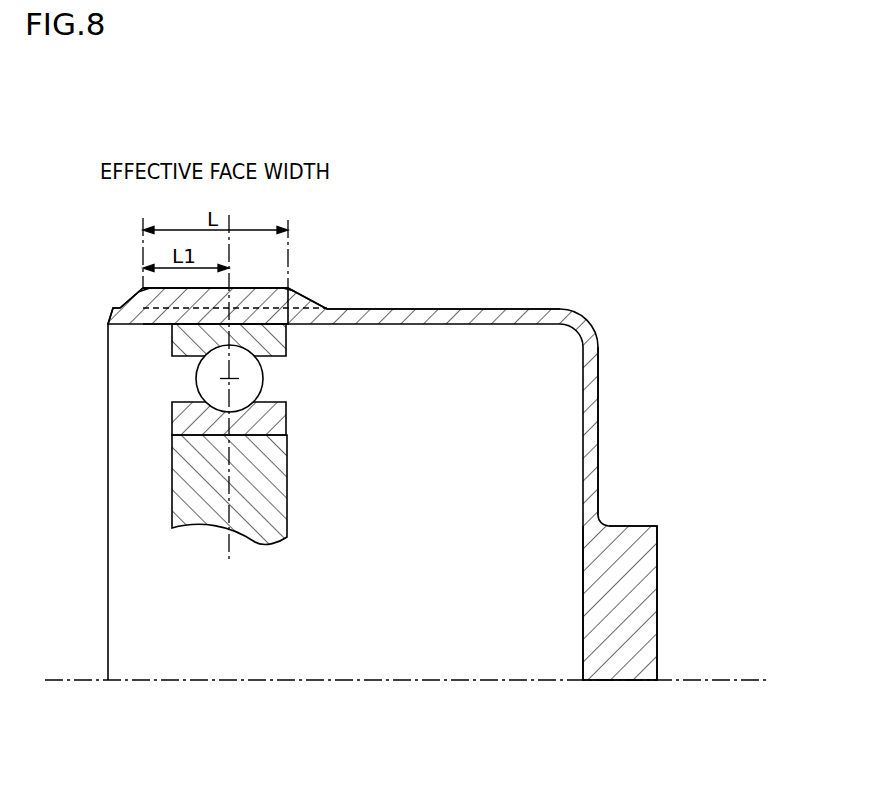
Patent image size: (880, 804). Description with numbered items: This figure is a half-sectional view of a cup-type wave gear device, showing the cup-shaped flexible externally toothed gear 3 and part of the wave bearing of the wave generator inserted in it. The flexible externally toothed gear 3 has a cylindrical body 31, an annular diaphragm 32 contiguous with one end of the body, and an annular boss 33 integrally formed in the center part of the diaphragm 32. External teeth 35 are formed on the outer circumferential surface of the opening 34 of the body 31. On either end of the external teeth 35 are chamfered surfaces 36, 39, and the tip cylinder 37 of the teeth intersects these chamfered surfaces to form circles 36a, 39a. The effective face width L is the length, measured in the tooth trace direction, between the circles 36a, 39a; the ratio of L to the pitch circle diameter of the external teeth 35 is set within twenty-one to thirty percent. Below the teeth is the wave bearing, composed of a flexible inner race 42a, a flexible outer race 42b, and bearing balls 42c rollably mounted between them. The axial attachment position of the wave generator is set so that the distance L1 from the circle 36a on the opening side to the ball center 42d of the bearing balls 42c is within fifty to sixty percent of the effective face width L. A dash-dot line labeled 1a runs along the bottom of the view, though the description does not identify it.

The cup-shaped flexible externally toothed gear 3 is at (571, 242).
The cylindrical body 31 is at (478, 313).
The annular diaphragm 32 is at (598, 408).
The annular boss 33 is at (650, 577).
The opening 34 is at (117, 310).
The external teeth 35 is at (253, 297).
The chamfered surface 36 is at (127, 302).
The circle 36a is at (143, 288).
The tip cylinder 37 is at (173, 287).
The chamfered surface 39 is at (315, 305).
The circle 39a is at (292, 289).
The inner race 42a is at (264, 440).
The outer race 42b is at (280, 342).
The bearing balls 42c is at (263, 378).
The ball center 42d is at (260, 438).
The rotation axis 1a is at (733, 680).